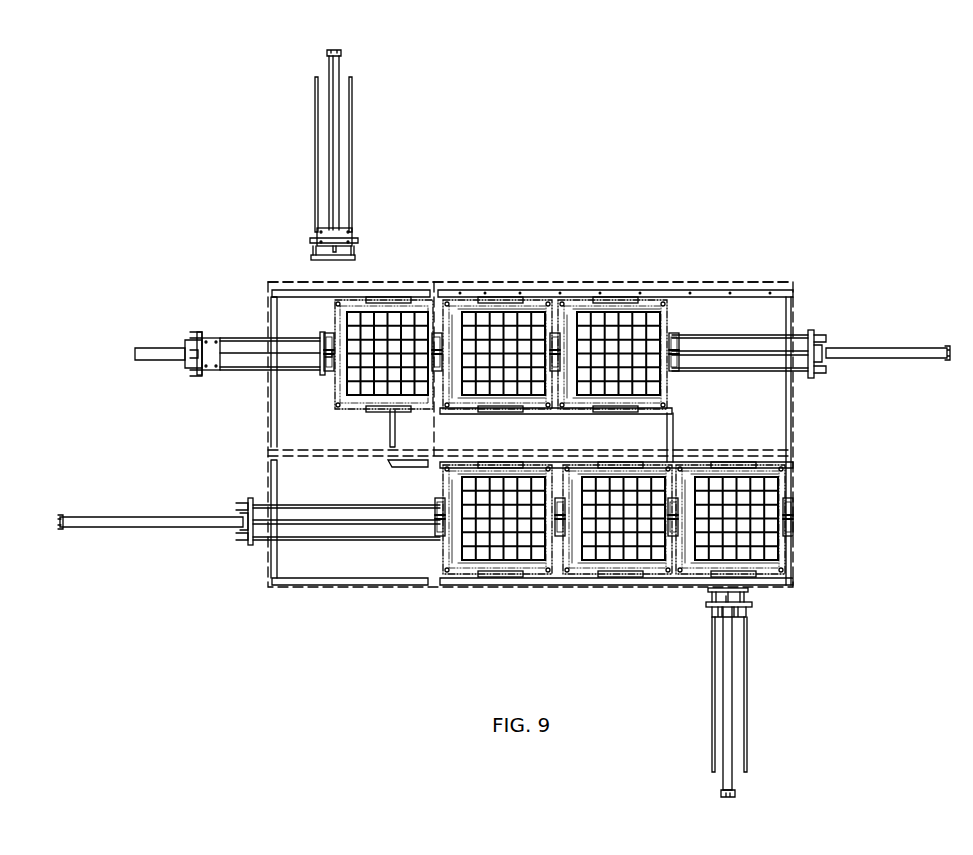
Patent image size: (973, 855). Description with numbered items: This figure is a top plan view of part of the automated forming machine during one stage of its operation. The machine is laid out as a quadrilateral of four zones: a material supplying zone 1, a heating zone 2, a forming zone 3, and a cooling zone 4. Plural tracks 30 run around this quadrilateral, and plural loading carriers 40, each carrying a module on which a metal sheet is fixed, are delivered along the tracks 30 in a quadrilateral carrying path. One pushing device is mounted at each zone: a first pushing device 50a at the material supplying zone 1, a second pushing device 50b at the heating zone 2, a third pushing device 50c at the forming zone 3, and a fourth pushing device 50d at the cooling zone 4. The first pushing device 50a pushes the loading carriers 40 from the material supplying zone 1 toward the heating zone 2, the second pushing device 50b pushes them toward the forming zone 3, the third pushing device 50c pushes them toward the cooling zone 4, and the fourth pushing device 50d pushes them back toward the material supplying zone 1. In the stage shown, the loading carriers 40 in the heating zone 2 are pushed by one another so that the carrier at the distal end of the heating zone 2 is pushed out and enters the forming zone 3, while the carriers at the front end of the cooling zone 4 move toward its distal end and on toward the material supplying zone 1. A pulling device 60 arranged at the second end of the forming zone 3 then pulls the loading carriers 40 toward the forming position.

The material supplying zone 1 is at (792, 538).
The heating zone 2 is at (715, 288).
The forming zone 3 is at (288, 283).
The cooling zone 4 is at (355, 588).
The tracks 30 is at (536, 295).
The loading carriers 40 is at (425, 300).
The first pushing device 50a is at (760, 603).
The second pushing device 50b is at (818, 330).
The third pushing device 50c is at (352, 237).
The fourth pushing device 50d is at (248, 547).
The pulling device 60 is at (212, 338).